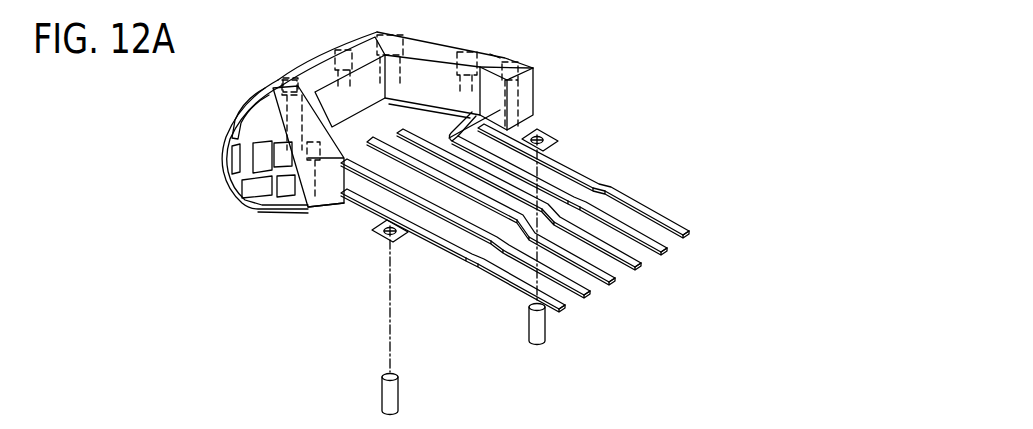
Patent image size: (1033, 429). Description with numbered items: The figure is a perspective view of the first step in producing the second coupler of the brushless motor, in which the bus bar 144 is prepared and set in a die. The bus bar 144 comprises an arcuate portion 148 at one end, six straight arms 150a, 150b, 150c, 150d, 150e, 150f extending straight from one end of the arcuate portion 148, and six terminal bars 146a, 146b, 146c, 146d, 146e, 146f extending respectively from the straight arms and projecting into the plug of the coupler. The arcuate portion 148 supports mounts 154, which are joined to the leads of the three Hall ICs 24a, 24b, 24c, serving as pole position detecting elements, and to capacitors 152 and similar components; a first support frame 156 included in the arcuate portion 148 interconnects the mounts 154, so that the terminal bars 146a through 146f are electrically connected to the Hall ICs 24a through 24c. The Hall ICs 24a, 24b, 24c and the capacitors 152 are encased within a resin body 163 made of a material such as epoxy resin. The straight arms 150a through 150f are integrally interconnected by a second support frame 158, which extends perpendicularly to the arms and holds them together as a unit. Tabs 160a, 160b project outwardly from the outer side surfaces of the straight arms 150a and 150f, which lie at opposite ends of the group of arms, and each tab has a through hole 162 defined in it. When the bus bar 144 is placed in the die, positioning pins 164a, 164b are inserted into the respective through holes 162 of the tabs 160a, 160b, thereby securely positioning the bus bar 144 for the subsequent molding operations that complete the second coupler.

The Hall IC 24a is at (245, 190).
The Hall IC 24b is at (288, 78).
The Hall IC 24c is at (392, 33).
The bus bar 144 is at (608, 170).
The terminal bar 146a is at (565, 310).
The terminal bar 146b is at (585, 298).
The terminal bar 146c is at (615, 284).
The terminal bar 146d is at (643, 270).
The terminal bar 146e is at (665, 250).
The terminal bar 146f is at (667, 220).
The arcuate portion 148 is at (235, 106).
The straight arm 150a is at (430, 238).
The straight arm 150b is at (470, 270).
The straight arm 150c is at (492, 255).
The straight arm 150d is at (518, 212).
The straight arm 150e is at (543, 186).
The straight arm 150f is at (565, 172).
The capacitor 152 is at (338, 60).
The mount 154 is at (262, 108).
The first support frame 156 is at (254, 150).
The second support frame 158 is at (340, 210).
The tab 160a is at (370, 231).
The tab 160b is at (548, 138).
The through hole 162 is at (538, 130).
The resin body 163 is at (498, 55).
The positioning pin 164a is at (392, 395).
The positioning pin 164b is at (538, 345).